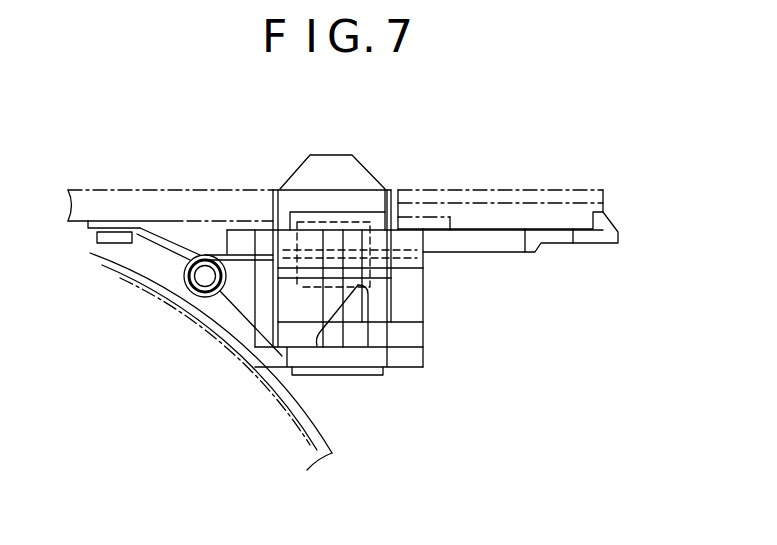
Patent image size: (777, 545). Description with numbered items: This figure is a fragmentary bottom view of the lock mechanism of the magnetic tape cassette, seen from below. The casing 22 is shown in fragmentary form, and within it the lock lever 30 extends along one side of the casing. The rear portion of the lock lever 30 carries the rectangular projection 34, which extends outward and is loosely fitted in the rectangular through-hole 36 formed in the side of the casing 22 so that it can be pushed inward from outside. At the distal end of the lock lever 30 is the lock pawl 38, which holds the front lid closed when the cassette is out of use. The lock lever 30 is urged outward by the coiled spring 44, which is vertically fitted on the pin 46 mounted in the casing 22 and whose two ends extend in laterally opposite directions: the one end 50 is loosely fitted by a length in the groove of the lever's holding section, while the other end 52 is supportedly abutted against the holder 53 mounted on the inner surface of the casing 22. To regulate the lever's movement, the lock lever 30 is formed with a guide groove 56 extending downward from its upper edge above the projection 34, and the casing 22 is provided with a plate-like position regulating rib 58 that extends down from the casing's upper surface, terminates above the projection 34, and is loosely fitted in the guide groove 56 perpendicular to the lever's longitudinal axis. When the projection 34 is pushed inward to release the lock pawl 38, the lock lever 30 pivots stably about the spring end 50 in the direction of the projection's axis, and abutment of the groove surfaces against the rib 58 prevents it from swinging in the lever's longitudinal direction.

The casing 22 is at (172, 188).
The lock lever 30 is at (494, 253).
The projection 34 is at (362, 165).
The through-hole 36 is at (393, 190).
The lock pawl 38 is at (620, 237).
The spring 44 is at (222, 306).
The pin 46 is at (184, 297).
The one end of the spring 50 is at (421, 265).
The other end of the spring 52 is at (115, 244).
The holder 53 is at (90, 236).
The guide groove 56 is at (357, 233).
The position regulating rib 58 is at (332, 238).